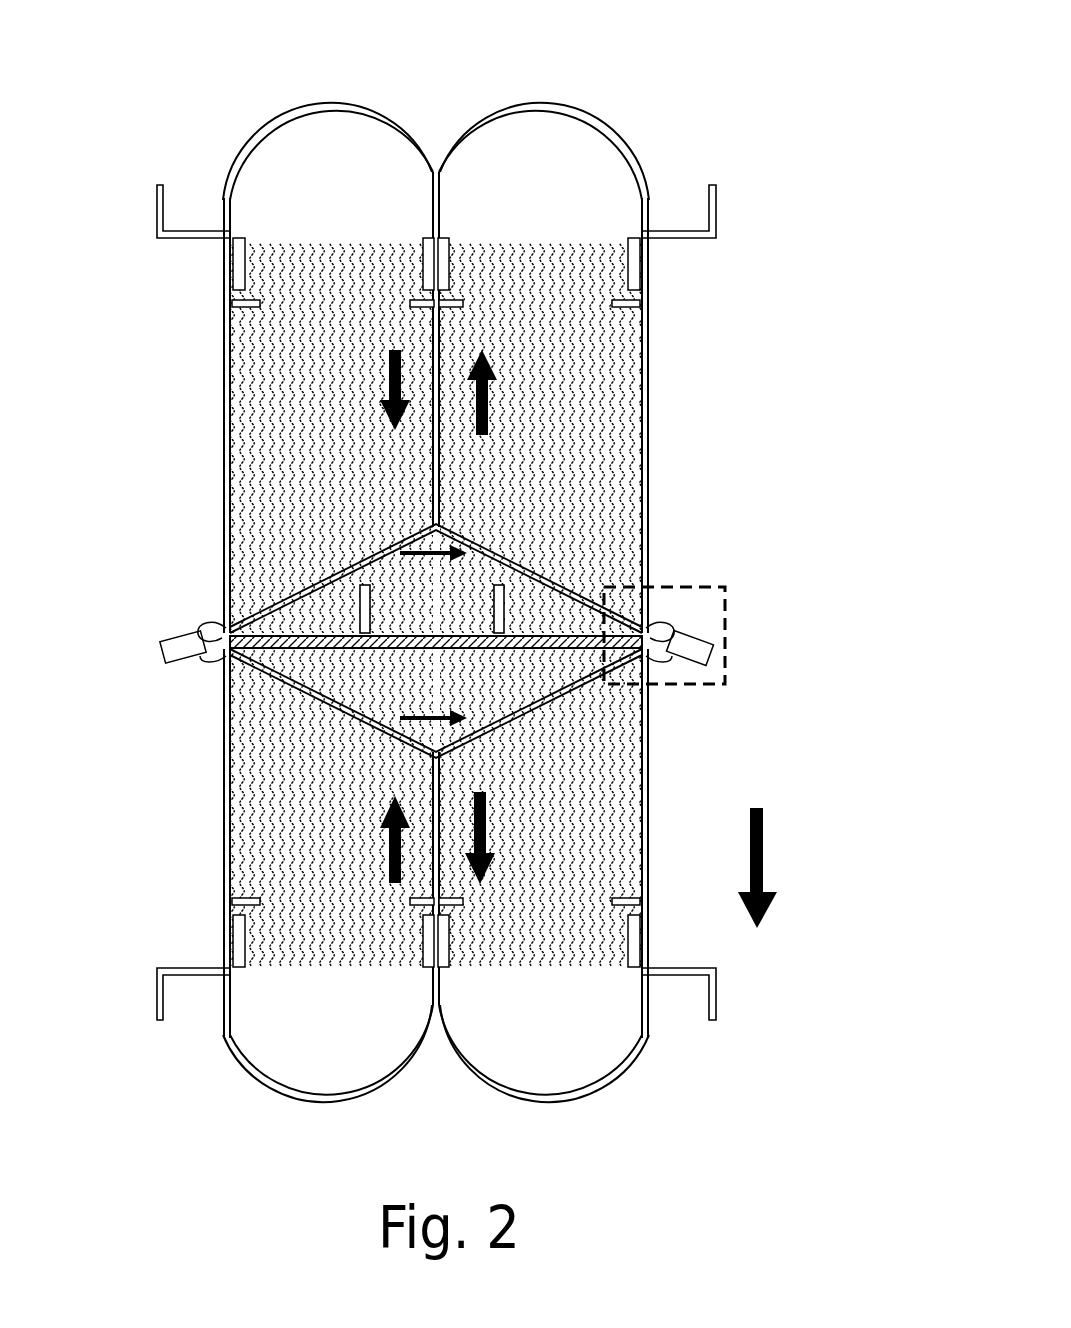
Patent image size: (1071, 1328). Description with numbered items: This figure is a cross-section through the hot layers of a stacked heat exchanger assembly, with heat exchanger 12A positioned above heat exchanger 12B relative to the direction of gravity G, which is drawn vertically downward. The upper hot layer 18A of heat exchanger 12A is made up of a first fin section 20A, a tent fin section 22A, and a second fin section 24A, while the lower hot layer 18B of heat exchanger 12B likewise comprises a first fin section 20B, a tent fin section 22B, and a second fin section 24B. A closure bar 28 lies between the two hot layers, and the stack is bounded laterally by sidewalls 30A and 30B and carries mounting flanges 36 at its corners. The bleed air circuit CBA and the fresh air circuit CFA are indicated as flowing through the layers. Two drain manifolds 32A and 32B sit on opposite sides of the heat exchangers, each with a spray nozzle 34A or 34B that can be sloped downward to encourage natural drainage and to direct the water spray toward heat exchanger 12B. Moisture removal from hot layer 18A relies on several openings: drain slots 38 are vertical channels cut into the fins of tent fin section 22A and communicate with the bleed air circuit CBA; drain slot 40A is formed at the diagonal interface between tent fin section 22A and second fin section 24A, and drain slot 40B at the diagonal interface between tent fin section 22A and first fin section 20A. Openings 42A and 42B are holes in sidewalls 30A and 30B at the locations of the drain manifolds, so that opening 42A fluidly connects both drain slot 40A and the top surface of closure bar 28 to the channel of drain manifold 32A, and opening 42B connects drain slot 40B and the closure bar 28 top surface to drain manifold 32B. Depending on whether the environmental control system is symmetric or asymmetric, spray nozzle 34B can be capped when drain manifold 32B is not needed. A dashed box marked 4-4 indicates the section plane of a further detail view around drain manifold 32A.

The heat exchanger 12A is at (197, 99).
The heat exchanger 12B is at (211, 1037).
The hot layer 18A is at (448, 402).
The hot layer 18B is at (368, 843).
The first fin section 20A is at (331, 438).
The second fin section 24A is at (541, 438).
The first fin section 20B is at (331, 808).
The second fin section 24B is at (541, 808).
The tent fin section 22A is at (435, 578).
The tent fin section 22B is at (436, 703).
The closure bar 28 is at (478, 650).
The sidewall 30A is at (648, 365).
The sidewall 30B is at (224, 858).
The drain manifold 32A is at (665, 617).
The drain manifold 32B is at (205, 622).
The spray nozzle 34A is at (705, 625).
The spray nozzle 34B is at (185, 640).
The mounting flange 36 is at (157, 213).
The drain slot 38 is at (278, 603).
The drain slot 40A is at (510, 612).
The drain slot 40B is at (357, 617).
The opening 42A is at (650, 662).
The opening 42B is at (215, 656).
The section line 4-4 is at (727, 680).
The bleed air circuit CBA is at (688, 314).
The fresh air circuit CFA is at (490, 845).
The gravity G is at (765, 850).